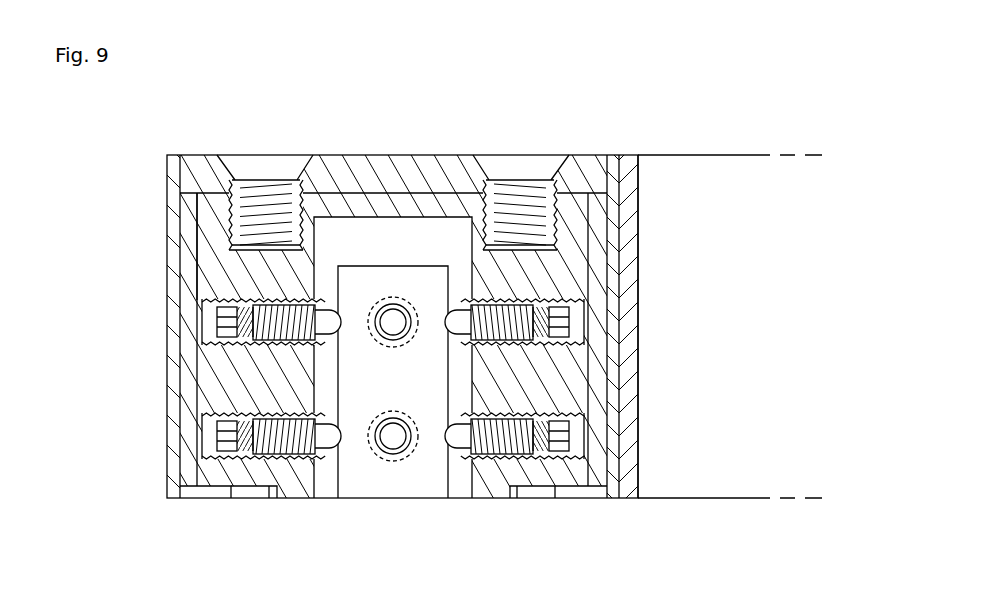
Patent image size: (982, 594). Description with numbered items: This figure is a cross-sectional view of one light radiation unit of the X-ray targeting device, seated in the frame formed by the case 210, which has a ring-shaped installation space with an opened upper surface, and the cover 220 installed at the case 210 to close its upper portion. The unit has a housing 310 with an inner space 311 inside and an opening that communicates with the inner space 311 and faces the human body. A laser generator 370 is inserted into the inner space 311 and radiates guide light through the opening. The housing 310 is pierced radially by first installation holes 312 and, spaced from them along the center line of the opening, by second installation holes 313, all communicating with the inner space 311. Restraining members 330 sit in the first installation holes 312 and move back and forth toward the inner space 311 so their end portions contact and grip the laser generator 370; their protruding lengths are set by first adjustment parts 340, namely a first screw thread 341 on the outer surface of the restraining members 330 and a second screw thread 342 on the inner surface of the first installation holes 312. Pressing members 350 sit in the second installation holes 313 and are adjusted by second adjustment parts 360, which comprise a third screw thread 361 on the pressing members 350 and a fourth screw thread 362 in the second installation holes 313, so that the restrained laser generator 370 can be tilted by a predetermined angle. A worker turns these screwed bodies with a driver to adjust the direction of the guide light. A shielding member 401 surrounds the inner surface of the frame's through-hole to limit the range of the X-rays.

The case 210 is at (441, 165).
The cover 220 is at (580, 492).
The housing 310 is at (212, 210).
The inner space 311 is at (387, 229).
The first installation holes 312 is at (607, 470).
The second installation holes 313 is at (583, 312).
The restraining members 330 is at (238, 418).
The first adjustment parts 340 is at (228, 526).
The first screw thread 341 is at (243, 462).
The second screw thread 342 is at (203, 462).
The pressing members 350 is at (575, 290).
The second adjustment parts 360 is at (199, 269).
The third screw thread 361 is at (233, 285).
The fourth screw thread 362 is at (205, 298).
The laser generator 370 is at (421, 484).
The shielding member 401 is at (628, 405).